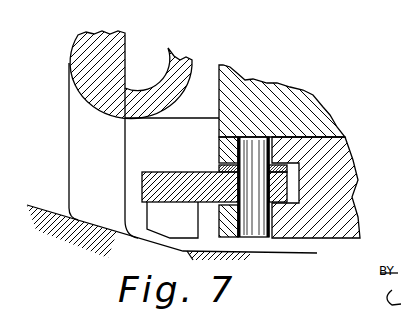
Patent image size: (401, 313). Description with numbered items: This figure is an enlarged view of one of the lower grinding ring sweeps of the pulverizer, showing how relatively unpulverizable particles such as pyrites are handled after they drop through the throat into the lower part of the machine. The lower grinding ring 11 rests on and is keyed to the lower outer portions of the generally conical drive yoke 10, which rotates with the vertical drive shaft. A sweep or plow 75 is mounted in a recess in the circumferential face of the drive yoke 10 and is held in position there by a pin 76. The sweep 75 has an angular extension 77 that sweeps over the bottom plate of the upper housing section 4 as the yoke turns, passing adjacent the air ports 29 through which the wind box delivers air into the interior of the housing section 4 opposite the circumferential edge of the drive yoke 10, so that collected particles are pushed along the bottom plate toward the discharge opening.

The upper section of the housing 4 is at (76, 50).
The air ports 29 is at (96, 174).
The lower grinding ring 11 is at (305, 103).
The drive yoke 10 is at (331, 180).
The sweep 75 is at (155, 171).
The pin 76 is at (243, 150).
The angular extension 77 is at (173, 221).